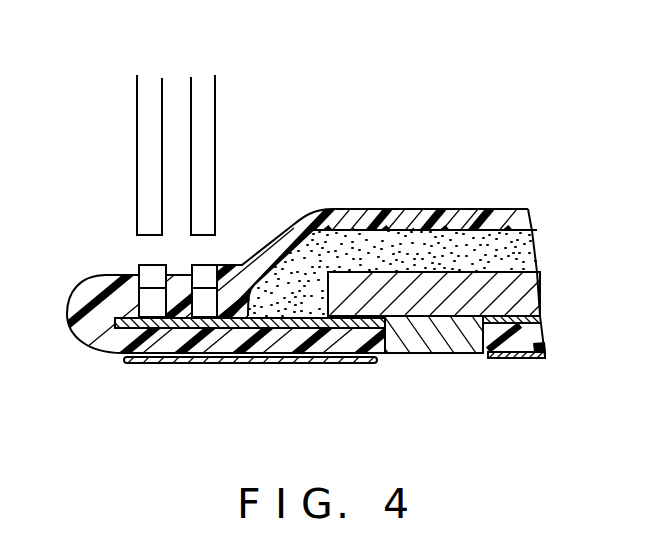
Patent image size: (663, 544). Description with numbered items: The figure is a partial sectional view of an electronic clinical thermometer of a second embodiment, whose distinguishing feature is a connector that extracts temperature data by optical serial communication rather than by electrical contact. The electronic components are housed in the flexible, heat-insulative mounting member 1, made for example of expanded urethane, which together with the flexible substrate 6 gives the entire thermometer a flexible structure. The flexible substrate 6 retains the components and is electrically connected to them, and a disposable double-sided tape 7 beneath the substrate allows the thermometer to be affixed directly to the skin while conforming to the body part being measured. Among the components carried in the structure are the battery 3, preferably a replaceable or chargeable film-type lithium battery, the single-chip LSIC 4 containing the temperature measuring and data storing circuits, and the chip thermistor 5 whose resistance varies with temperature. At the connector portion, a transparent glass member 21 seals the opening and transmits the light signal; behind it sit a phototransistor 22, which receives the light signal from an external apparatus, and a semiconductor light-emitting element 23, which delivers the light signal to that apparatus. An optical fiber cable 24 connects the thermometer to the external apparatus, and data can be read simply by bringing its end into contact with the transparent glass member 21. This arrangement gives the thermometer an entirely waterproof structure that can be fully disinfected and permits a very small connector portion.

The mounting member 1 is at (505, 214).
The battery 3 is at (531, 246).
The LSIC (C-MOS) 4 is at (535, 288).
The chip thermistor 5 is at (416, 326).
The flexible substrate 6 is at (297, 323).
The double-sided tape 7 is at (362, 363).
The transparent glass member 21 is at (153, 277).
The phototransistor 22 is at (153, 310).
The semiconductor light-emitting element 23 is at (207, 313).
The optical fiber cable 24 is at (205, 85).